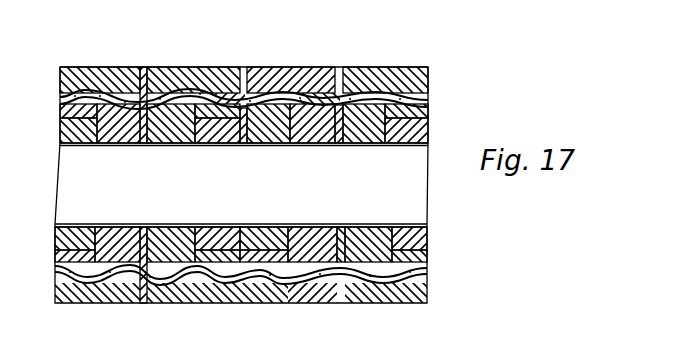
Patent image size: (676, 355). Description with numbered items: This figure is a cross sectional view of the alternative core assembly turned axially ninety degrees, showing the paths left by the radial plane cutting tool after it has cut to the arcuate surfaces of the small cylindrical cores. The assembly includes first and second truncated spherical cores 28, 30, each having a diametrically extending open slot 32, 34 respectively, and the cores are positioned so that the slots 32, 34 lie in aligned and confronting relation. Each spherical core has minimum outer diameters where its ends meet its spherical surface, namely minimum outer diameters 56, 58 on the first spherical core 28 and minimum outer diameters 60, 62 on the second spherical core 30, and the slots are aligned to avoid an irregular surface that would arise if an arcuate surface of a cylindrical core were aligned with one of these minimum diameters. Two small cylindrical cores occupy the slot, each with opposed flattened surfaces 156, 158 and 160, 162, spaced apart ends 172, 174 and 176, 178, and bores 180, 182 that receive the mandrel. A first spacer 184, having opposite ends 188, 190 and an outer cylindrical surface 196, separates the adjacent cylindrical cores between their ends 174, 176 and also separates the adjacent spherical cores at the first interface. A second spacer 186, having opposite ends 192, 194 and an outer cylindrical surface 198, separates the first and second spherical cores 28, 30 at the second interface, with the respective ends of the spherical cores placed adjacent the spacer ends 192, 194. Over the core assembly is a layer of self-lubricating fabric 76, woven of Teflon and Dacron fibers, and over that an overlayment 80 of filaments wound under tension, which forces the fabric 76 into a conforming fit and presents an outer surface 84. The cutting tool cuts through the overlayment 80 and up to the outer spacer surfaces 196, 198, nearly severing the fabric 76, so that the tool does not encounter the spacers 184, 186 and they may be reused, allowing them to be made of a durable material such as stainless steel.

The first truncated spherical core 28 is at (172, 100).
The second truncated spherical core 30 is at (343, 98).
The open slot of first spherical core 32 is at (208, 127).
The open slot of second spherical core 34 is at (278, 226).
The minimum outer diameter of first spherical core 56 is at (116, 144).
The minimum outer diameter of first spherical core 58 is at (195, 290).
The minimum outer diameter of second spherical core 60 is at (240, 282).
The minimum outer diameter of second spherical core 62 is at (428, 110).
The self-lubricating fabric 76 is at (60, 98).
The overlayment 80 is at (62, 67).
The outer surface of overlayment 84 is at (84, 67).
The flattened surface of cylindrical core 156 is at (234, 106).
The flattened surface of cylindrical core 158 is at (185, 278).
The flattened surface of cylindrical core 160 is at (300, 100).
The flattened surface of cylindrical core 162 is at (283, 282).
The end of cylindrical core 172 is at (172, 128).
The end of cylindrical core 174 is at (266, 144).
The end of cylindrical core 176 is at (248, 201).
The end of cylindrical core 178 is at (343, 144).
The bore of cylindrical core 180 is at (200, 226).
The bore of cylindrical core 182 is at (300, 137).
The first spacer 184 is at (245, 130).
The second spacer 186 is at (393, 145).
The end of first spacer 188 is at (228, 100).
The end of first spacer 190 is at (268, 103).
The end of second spacer 192 is at (327, 226).
The end of second spacer 194 is at (380, 226).
The outer cylindrical surface of first spacer 196 is at (215, 280).
The outer cylindrical surface of second spacer 198 is at (350, 304).